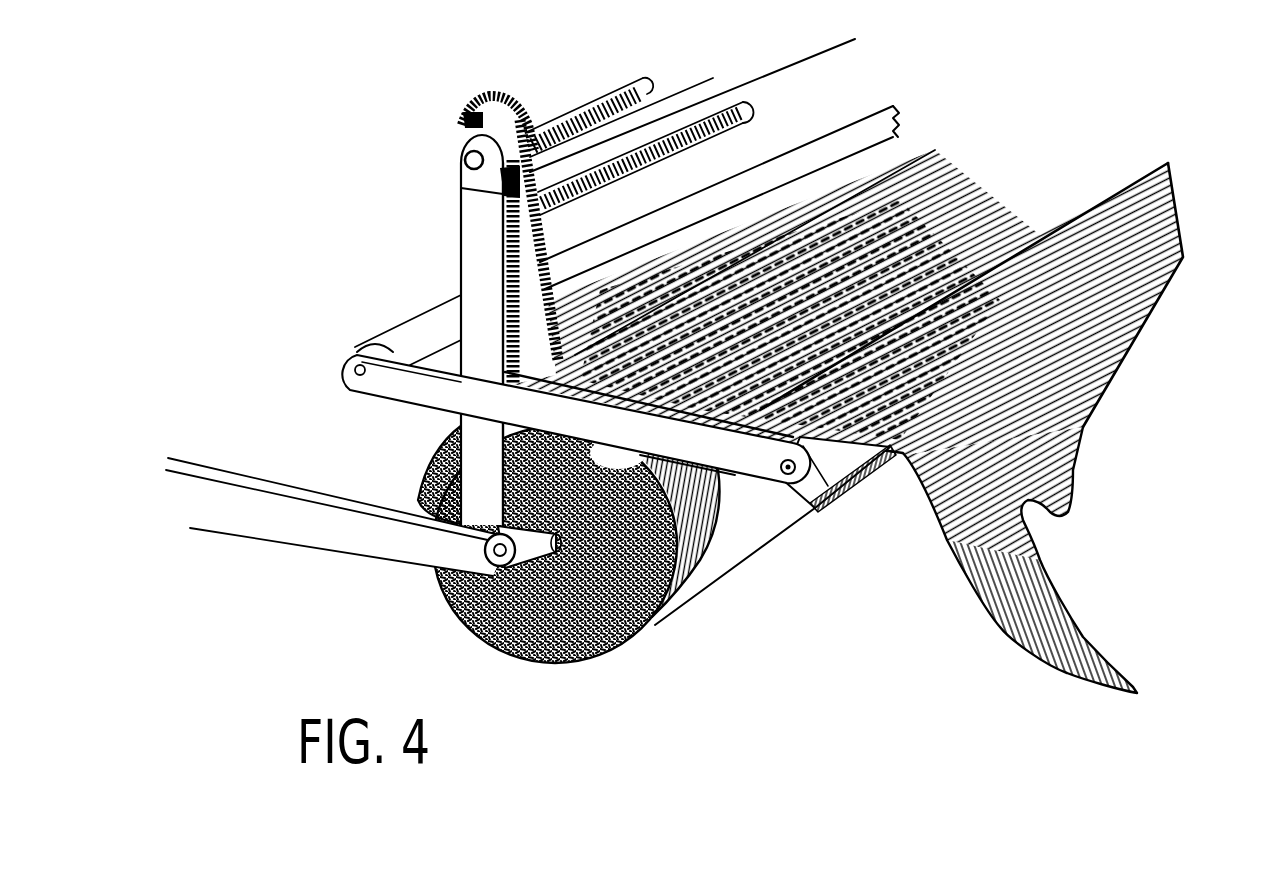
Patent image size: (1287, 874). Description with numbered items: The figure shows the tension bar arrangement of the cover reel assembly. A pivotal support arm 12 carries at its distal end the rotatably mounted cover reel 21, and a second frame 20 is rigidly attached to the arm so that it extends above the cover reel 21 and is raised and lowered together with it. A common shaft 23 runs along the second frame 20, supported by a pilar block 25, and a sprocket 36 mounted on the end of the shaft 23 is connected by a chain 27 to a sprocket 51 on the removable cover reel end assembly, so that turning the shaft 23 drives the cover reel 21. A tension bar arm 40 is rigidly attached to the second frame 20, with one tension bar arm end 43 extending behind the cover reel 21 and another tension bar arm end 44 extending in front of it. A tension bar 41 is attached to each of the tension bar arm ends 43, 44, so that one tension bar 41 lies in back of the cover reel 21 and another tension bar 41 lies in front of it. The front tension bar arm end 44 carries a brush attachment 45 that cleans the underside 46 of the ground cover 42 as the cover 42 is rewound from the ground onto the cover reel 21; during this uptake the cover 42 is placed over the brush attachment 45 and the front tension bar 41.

The pivotal support arm 12 is at (298, 555).
The second frame 20 is at (470, 323).
The cover reel 21 is at (545, 636).
The common shaft 23 is at (584, 96).
The pilar block 25 is at (458, 166).
The chain 27 is at (560, 302).
The sprocket 36 is at (497, 100).
The tension bar arm 40 is at (424, 392).
The tension bar 41 is at (720, 190).
The ground cover 42 is at (1077, 433).
The tension bar arm end 43 is at (352, 380).
The tension bar arm end 44 is at (772, 470).
The brush attachment 45 is at (870, 462).
The underside 46 is at (728, 560).
The sprocket 51 is at (568, 546).